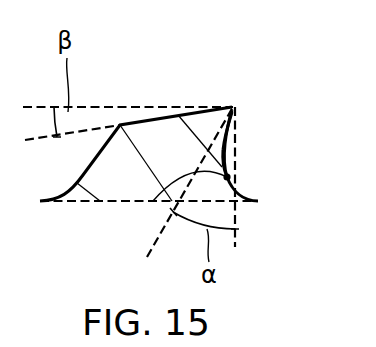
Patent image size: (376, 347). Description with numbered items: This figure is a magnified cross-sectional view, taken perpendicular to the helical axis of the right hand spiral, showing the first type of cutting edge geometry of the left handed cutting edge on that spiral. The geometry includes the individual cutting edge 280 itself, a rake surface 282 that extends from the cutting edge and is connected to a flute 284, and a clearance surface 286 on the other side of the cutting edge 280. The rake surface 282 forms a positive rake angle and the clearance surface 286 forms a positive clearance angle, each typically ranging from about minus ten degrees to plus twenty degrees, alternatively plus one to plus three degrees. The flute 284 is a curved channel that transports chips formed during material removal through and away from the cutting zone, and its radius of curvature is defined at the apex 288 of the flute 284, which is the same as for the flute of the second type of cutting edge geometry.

The cutting edge 280 is at (232, 110).
The rake surface 282 is at (235, 121).
The flute 284 is at (238, 165).
The clearance surface 286 is at (183, 113).
The apex of the flute 288 is at (165, 190).